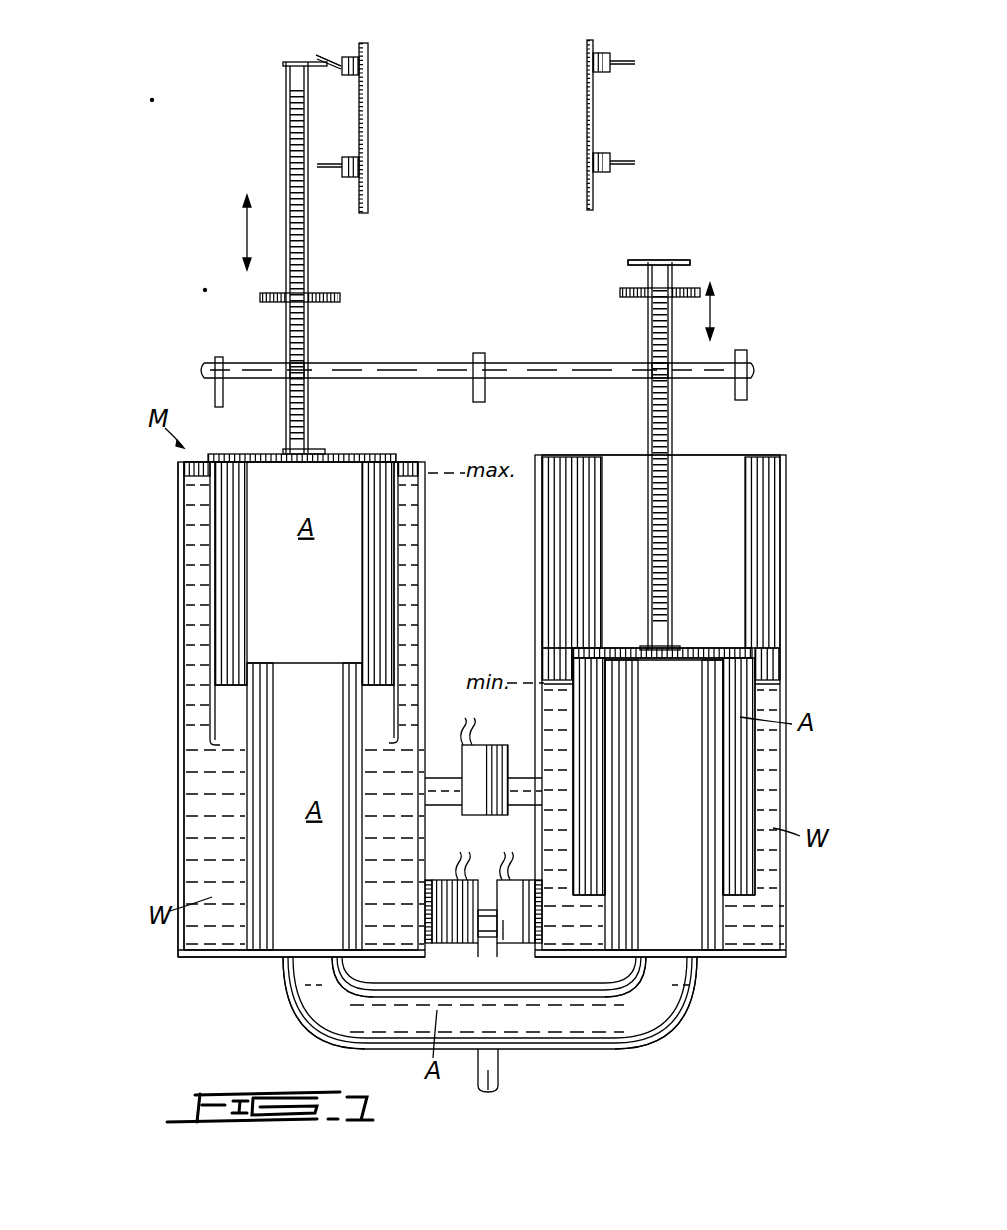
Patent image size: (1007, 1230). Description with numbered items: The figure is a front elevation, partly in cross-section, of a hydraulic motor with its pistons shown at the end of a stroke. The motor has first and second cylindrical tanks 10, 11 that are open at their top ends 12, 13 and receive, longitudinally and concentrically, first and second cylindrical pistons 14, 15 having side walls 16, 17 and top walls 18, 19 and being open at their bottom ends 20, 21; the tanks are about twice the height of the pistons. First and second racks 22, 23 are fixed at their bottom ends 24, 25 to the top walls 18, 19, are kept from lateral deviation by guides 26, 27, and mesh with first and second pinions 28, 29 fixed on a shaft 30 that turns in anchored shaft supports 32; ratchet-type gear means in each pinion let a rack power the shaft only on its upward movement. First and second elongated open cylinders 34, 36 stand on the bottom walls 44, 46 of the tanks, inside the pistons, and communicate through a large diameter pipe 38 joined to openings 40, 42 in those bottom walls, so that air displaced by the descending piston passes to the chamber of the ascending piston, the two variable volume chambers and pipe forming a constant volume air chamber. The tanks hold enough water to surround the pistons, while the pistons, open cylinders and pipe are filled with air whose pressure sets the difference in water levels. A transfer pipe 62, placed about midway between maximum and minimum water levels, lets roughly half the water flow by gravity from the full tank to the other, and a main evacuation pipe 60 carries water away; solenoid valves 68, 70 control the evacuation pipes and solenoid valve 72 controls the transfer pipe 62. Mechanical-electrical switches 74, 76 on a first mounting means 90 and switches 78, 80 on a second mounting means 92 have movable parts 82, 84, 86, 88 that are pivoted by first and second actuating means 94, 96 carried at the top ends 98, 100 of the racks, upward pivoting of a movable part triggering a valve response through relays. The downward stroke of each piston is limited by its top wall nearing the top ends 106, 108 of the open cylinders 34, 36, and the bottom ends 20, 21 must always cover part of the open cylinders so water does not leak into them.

The first cylindrical tank 10 is at (184, 643).
The second cylindrical tank 11 is at (786, 506).
The top end 12 is at (423, 460).
The top end 13 is at (778, 455).
The first piston 14 is at (211, 650).
The second piston 15 is at (757, 790).
The side wall 16 is at (212, 545).
The side wall 17 is at (752, 672).
The top wall 18 is at (262, 454).
The top wall 19 is at (745, 655).
The bottom end 20 is at (213, 745).
The bottom end 21 is at (757, 934).
The first rack 22 is at (287, 161).
The second rack 23 is at (674, 500).
The bottom end 24 is at (318, 455).
The bottom end 25 is at (675, 648).
The guide 26 is at (330, 293).
The guide 27 is at (630, 289).
The first pinion 28 is at (306, 385).
The second pinion 29 is at (655, 372).
The shaft 30 is at (410, 363).
The shaft support 32 is at (223, 360).
The first elongated open cylinder 34 is at (246, 848).
The second elongated open cylinder 36 is at (729, 927).
The large diameter pipe 38 is at (300, 1020).
The opening 40 is at (305, 958).
The opening 42 is at (677, 955).
The bottom wall 44 is at (228, 957).
The bottom wall 46 is at (767, 955).
The main evacuation pipe 60 is at (498, 1058).
The transfer pipe 62 is at (450, 803).
The solenoid valve 68 is at (460, 932).
The solenoid valve 70 is at (525, 933).
The solenoid valve 72 is at (498, 745).
The mechanical-electrical switch 74 is at (344, 75).
The mechanical-electrical switch 76 is at (346, 178).
The mechanical-electrical switch 78 is at (603, 74).
The mechanical-electrical switch 80 is at (608, 173).
The movable part 82 is at (329, 60).
The movable part 84 is at (327, 164).
The movable part 86 is at (633, 61).
The movable part 88 is at (633, 161).
The first mounting means 90 is at (368, 115).
The second mounting means 92 is at (587, 118).
The first actuating means 94 is at (338, 67).
The second actuating means 96 is at (643, 260).
The top end 98 is at (283, 64).
The top end 100 is at (676, 261).
The top end 106 is at (240, 663).
The top end 108 is at (720, 657).